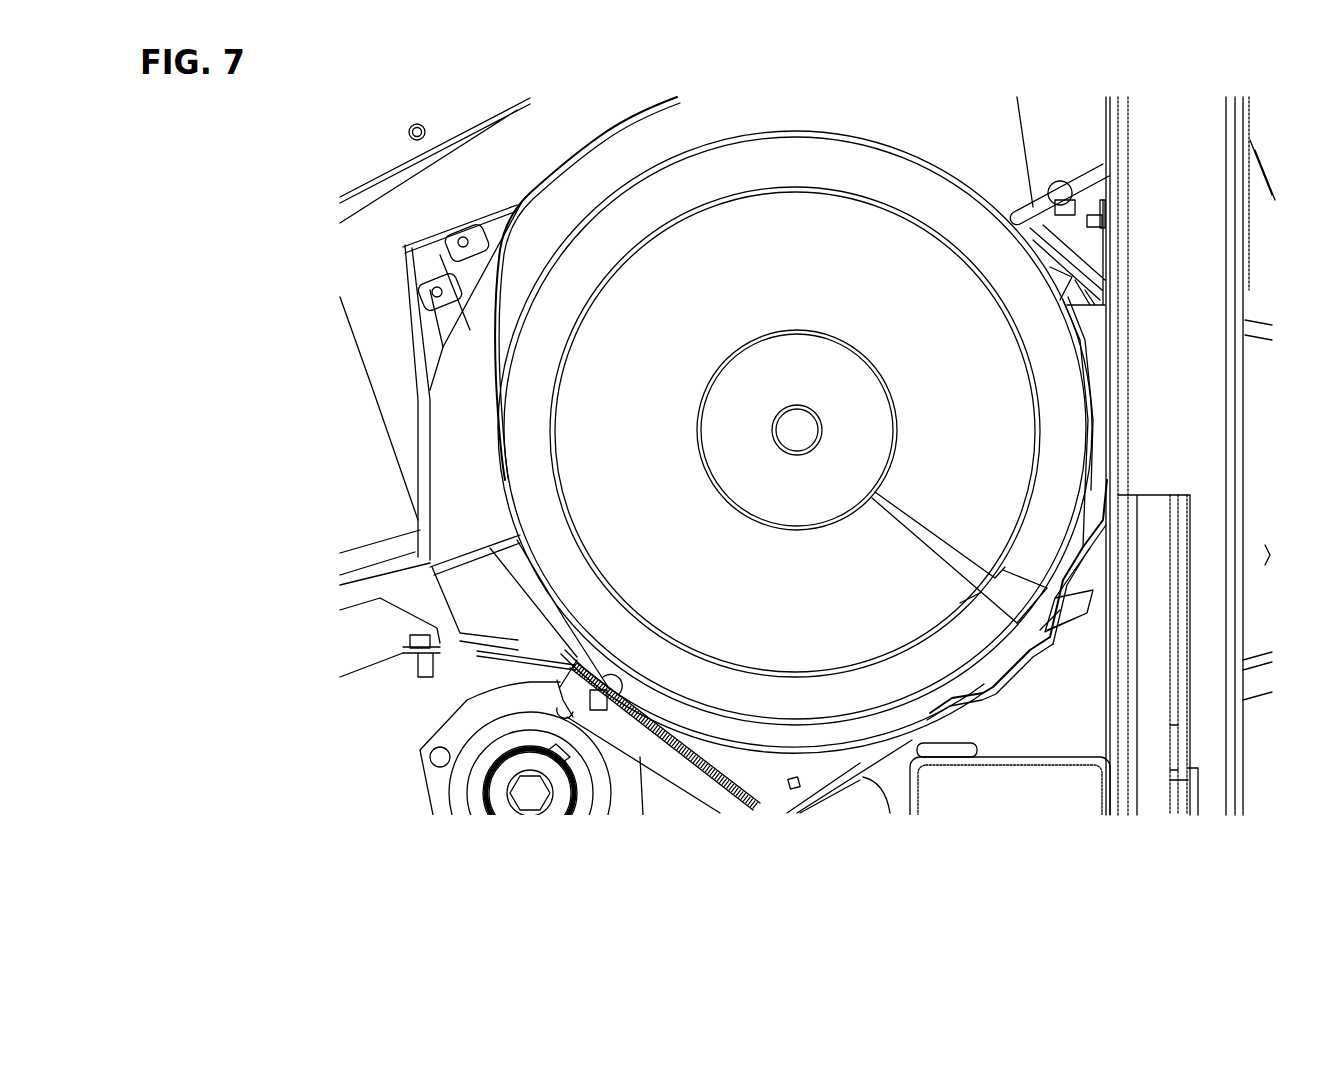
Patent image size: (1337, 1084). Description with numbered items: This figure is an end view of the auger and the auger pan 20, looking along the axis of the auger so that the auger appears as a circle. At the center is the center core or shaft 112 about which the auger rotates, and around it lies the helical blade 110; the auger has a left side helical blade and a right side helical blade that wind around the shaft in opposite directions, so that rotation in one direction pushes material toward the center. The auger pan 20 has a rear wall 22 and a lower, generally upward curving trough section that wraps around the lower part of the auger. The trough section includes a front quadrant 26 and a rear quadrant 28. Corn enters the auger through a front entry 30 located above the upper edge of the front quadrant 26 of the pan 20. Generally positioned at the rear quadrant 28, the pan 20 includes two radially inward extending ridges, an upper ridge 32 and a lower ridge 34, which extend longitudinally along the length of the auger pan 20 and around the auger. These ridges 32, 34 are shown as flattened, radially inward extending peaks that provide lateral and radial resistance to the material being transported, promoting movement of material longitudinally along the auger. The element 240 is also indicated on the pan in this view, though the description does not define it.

The auger pan 20 is at (994, 712).
The rear wall 22 is at (1107, 462).
The front quadrant 26 is at (622, 630).
The rear quadrant 28 is at (1005, 643).
The front entry 30 is at (530, 500).
The upper ridge 32 is at (1058, 598).
The lower ridge 34 is at (960, 695).
The helical blade 110 is at (948, 515).
The center core or shaft 112 is at (848, 344).
The strap 240 is at (780, 752).